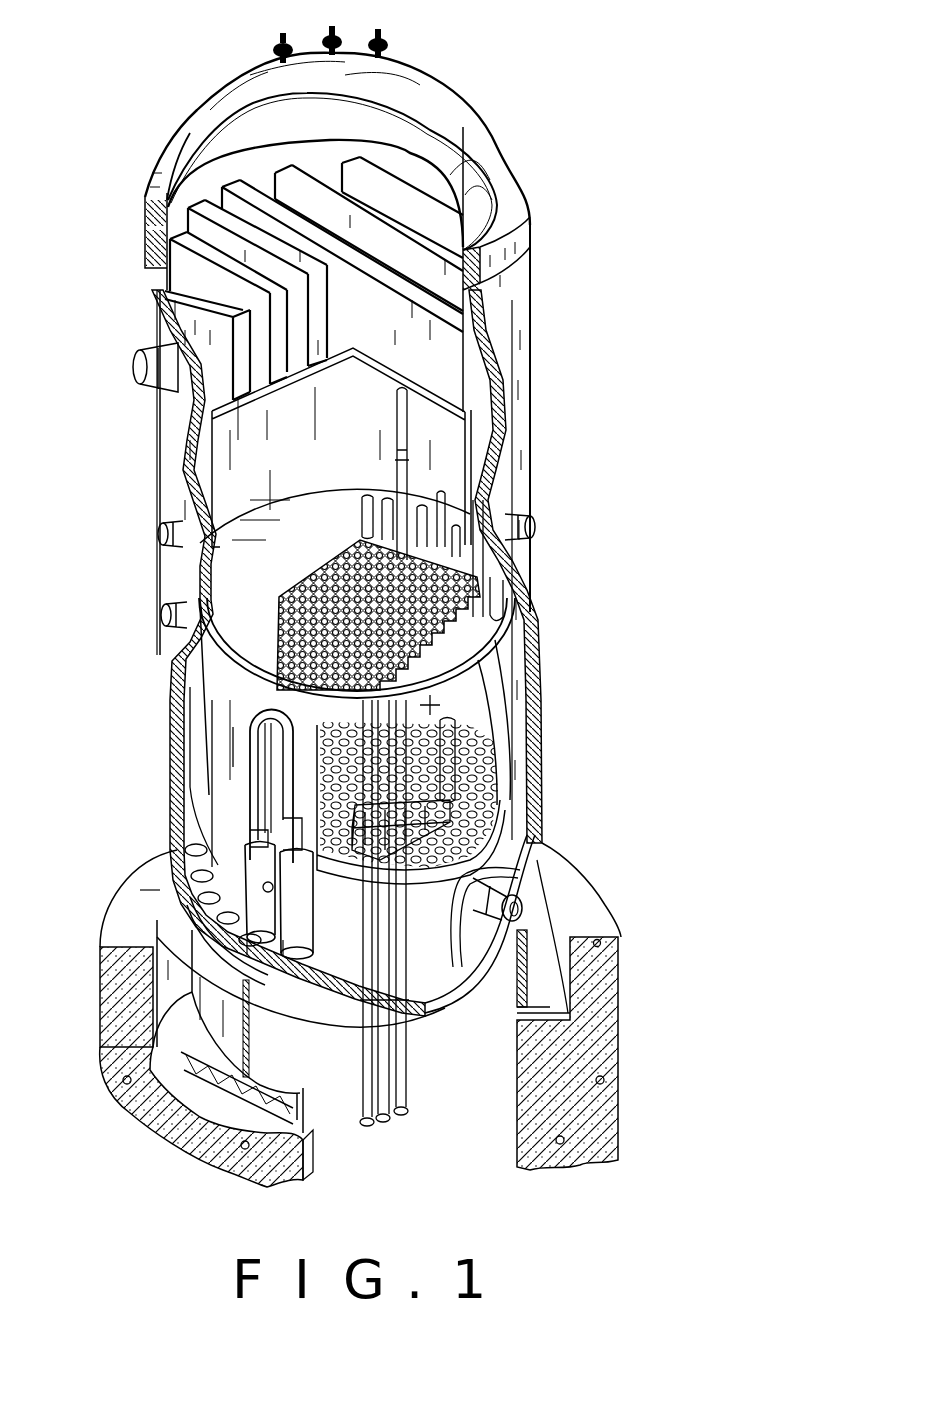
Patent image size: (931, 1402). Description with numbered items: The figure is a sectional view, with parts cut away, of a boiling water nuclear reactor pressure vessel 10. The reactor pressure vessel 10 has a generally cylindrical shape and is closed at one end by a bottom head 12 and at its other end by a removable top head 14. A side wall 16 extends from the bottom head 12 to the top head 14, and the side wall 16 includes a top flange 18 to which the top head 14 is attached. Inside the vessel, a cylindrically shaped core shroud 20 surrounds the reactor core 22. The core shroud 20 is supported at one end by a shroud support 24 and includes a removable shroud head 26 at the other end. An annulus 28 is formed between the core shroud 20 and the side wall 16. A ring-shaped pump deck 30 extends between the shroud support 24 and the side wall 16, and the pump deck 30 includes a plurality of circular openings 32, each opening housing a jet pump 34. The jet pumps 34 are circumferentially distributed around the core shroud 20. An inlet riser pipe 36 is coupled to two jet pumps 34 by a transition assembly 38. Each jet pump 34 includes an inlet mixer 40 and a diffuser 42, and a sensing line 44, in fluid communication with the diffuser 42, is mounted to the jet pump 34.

The reactor pressure vessel 10 is at (565, 100).
The bottom head 12 is at (455, 1005).
The top head 14 is at (440, 75).
The side wall 16 is at (170, 833).
The top flange 18 is at (513, 272).
The core shroud 20 is at (207, 673).
The reactor core 22 is at (420, 712).
The shroud support 24 is at (182, 854).
The shroud head 26 is at (295, 490).
The annulus 28 is at (170, 752).
The pump deck 30 is at (173, 850).
The circular openings 32 is at (170, 898).
The jet pump 34 is at (236, 778).
The inlet riser pipe 36 is at (272, 812).
The transition assembly 38 is at (242, 703).
The inlet mixer 40 is at (250, 729).
The diffuser 42 is at (270, 885).
The sensing line 44 is at (326, 905).